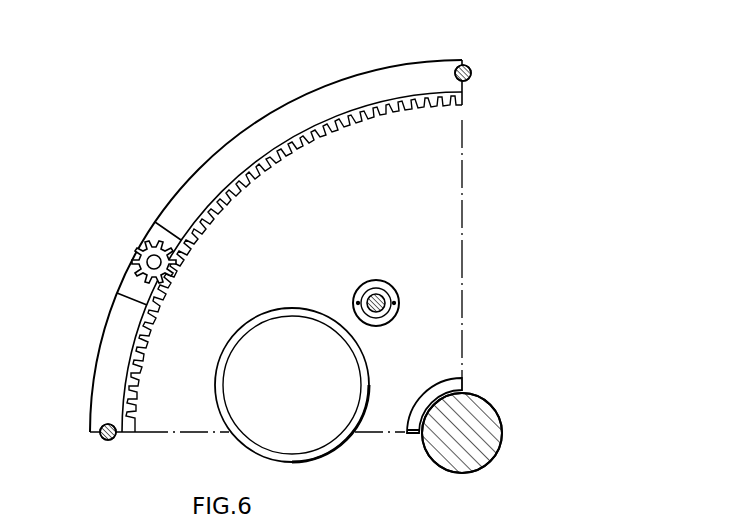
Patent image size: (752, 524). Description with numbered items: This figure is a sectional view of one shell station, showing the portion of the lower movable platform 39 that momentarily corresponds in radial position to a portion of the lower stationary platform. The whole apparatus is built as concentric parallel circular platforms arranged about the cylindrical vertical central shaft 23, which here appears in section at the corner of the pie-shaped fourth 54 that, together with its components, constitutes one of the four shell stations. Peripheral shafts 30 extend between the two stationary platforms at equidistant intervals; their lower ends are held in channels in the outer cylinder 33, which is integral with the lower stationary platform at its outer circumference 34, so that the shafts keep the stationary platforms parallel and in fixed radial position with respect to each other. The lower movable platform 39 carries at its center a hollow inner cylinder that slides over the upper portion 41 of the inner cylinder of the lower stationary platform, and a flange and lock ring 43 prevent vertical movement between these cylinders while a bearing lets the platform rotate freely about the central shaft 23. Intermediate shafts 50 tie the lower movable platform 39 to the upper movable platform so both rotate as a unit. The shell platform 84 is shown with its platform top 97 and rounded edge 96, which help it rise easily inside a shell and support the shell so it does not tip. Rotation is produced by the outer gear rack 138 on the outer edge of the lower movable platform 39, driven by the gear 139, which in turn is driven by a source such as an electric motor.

The central shaft 23 is at (486, 412).
The peripheral shafts 30 is at (472, 74).
The outer cylinder 33 is at (98, 384).
The outer circumference 34 is at (132, 436).
The lower movable platform 39 is at (440, 266).
The upper portion of the inner cylinder 41 is at (458, 382).
The lock ring 43 is at (406, 436).
The intermediate shafts 50 is at (375, 292).
The pie-shaped fourths 54 is at (446, 170).
The shell platform 84 is at (312, 437).
The rounded edge 96 is at (362, 373).
The platform top 97 is at (277, 327).
The outer gear rack 138 is at (130, 388).
The gear 139 is at (132, 262).